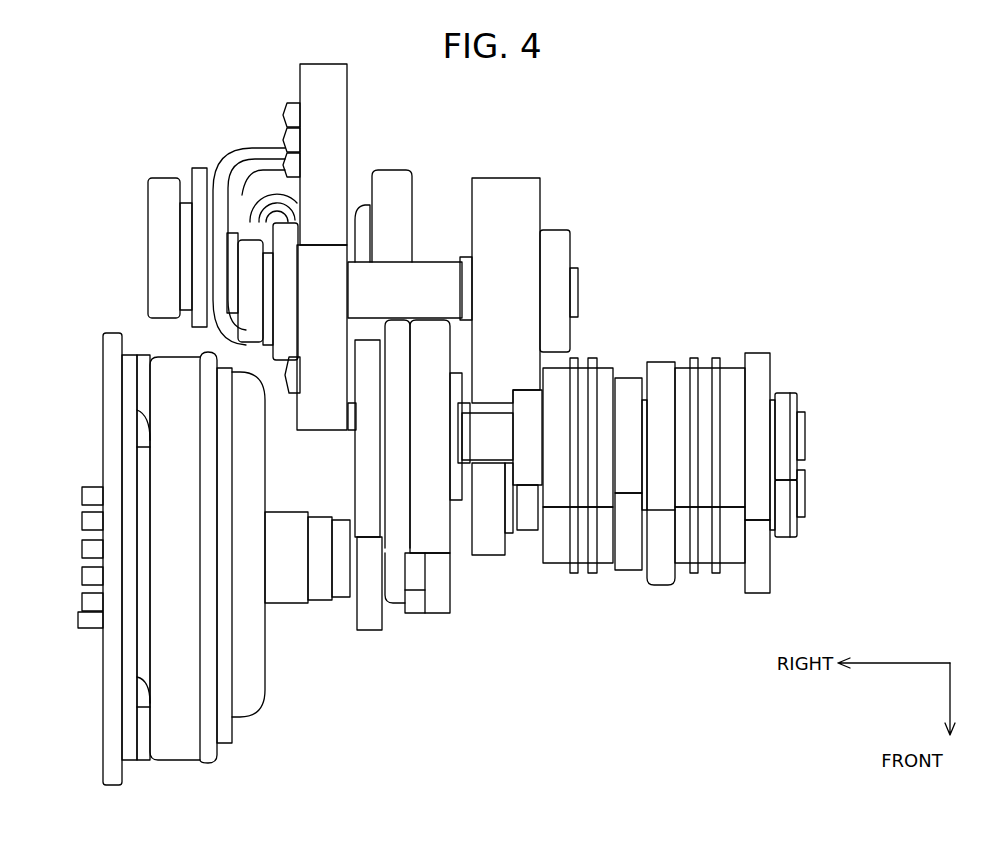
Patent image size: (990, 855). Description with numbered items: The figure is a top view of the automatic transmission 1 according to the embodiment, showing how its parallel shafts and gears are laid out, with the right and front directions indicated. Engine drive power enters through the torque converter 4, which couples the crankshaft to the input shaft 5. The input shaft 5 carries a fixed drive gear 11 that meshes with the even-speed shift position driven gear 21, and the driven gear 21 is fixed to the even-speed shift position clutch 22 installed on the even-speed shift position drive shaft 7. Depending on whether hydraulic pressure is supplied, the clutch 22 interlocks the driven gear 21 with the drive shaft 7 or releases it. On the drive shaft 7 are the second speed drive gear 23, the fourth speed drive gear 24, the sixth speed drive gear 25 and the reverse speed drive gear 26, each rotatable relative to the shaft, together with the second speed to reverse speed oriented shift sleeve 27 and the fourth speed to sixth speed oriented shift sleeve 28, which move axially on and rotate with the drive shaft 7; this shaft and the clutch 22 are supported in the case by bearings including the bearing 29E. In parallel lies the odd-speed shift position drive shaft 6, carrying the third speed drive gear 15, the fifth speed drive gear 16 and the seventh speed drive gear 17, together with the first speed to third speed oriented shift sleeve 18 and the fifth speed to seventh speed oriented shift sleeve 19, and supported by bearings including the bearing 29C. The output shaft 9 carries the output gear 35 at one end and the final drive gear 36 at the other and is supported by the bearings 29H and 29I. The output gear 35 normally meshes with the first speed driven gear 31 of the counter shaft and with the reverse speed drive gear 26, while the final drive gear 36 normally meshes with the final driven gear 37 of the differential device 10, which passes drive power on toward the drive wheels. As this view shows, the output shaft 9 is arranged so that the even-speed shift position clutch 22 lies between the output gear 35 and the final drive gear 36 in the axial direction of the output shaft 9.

The automatic transmission 1 is at (578, 140).
The torque converter 4 is at (178, 765).
The input shaft 5 is at (342, 572).
The odd-speed shift position drive shaft 6 is at (805, 493).
The even-speed shift position drive shaft 7 is at (805, 432).
The output shaft 9 is at (432, 277).
The differential device 10 is at (240, 147).
The drive gear 11 is at (368, 625).
The 3rd speed drive gear 15 is at (628, 560).
The 5th speed drive gear 16 is at (660, 578).
The 7th speed drive gear 17 is at (757, 585).
The 1st speed-3rd speed oriented shift sleeve 18 is at (583, 557).
The 5th speed-7th speed oriented shift sleeve 19 is at (705, 557).
The even-speed shift position driven gear 21 is at (367, 468).
The even-speed shift position clutch 22 is at (437, 545).
The 2nd speed drive gear 23 is at (628, 385).
The 4th speed drive gear 24 is at (660, 368).
The 6th speed drive gear 25 is at (757, 360).
The reverse speed drive gear 26 is at (528, 400).
The 2nd speed-reverse speed oriented shift sleeve 27 is at (582, 373).
The 4th speed-6th speed oriented shift sleeve 28 is at (703, 372).
The bearing 29C is at (785, 527).
The bearing 29E is at (785, 404).
The bearing 29H is at (250, 292).
The bearing 29I is at (560, 245).
The 1st speed driven gear 31 is at (488, 550).
The output gear 35 is at (528, 198).
The final drive gear 36 is at (330, 255).
The final driven gear 37 is at (335, 85).